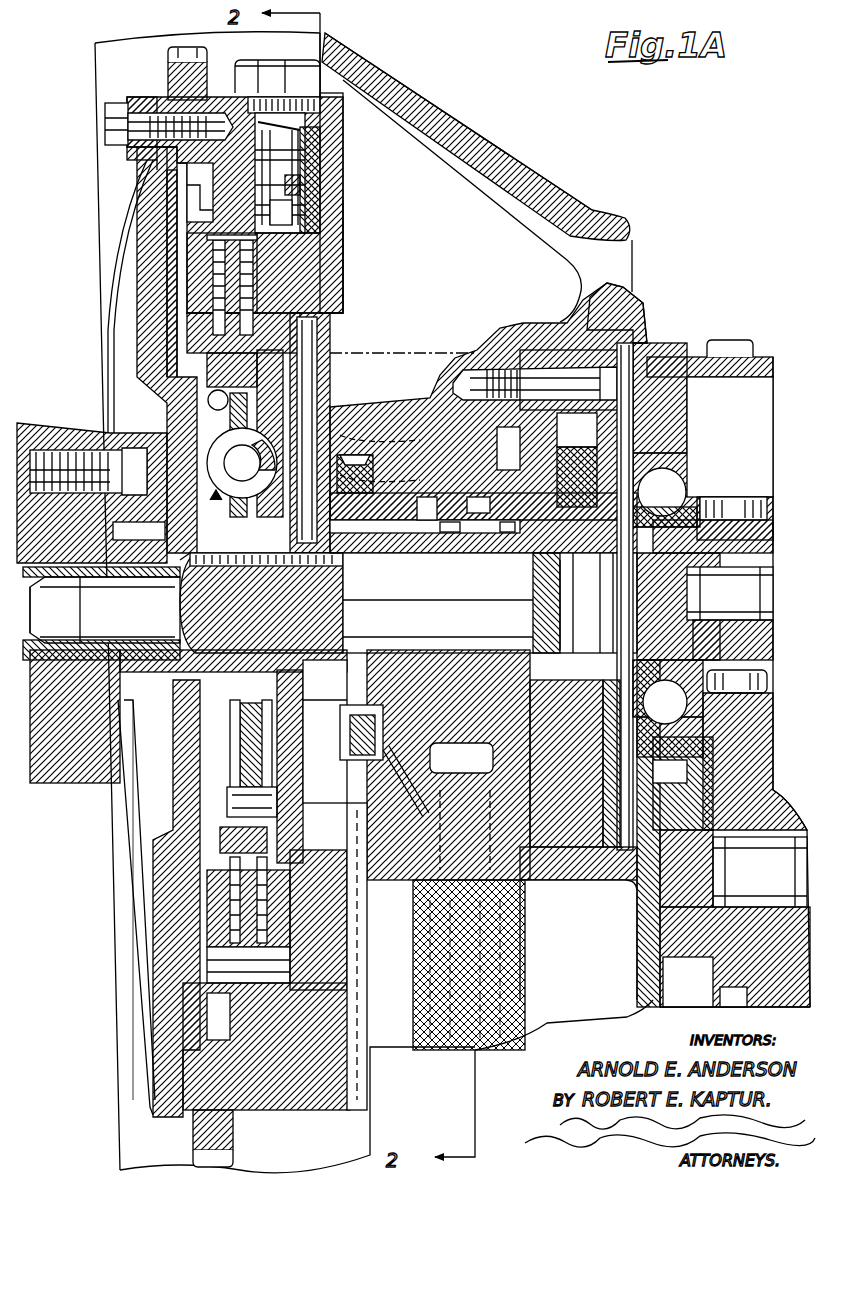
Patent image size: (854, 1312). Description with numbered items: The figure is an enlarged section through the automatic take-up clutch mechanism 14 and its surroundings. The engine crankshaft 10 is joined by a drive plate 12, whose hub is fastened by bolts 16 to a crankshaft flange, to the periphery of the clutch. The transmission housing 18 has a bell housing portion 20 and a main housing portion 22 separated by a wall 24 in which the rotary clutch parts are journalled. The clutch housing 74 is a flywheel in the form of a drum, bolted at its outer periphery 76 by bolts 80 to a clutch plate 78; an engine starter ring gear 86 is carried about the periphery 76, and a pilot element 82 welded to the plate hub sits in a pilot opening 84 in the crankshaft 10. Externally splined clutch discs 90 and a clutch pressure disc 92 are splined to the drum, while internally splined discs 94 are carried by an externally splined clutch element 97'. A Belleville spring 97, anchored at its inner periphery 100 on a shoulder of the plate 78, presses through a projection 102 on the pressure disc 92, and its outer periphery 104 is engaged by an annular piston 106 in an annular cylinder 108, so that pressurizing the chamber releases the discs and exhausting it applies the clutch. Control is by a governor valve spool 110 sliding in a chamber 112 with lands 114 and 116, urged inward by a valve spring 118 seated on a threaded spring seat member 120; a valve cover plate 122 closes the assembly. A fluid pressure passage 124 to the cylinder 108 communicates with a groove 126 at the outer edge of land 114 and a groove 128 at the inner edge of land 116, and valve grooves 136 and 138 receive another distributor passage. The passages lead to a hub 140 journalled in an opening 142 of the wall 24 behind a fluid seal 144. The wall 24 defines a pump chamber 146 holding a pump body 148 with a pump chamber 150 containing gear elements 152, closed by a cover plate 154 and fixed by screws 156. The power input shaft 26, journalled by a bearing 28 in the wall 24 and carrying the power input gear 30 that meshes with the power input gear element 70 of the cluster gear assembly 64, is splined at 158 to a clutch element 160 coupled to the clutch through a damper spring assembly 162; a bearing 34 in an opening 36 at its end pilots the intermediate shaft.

The engine crankshaft 10 is at (55, 783).
The drive plate 12 is at (108, 315).
The automatic take-up clutch mechanism 14 is at (350, 80).
The bolts 16 is at (120, 437).
The transmission housing 18 is at (452, 100).
The bell housing portion 20 is at (424, 74).
The main housing portion 22 is at (645, 935).
The separating wall 24 is at (520, 323).
The power input shaft 26 is at (483, 622).
The bearing 28 is at (640, 488).
The power input gear 30 is at (748, 498).
The bearing 34 is at (742, 583).
The opening 36 is at (774, 548).
The cluster gear assembly 64 is at (797, 790).
The power input gear element 70 is at (768, 682).
The clutch housing 74 is at (283, 1097).
The outer periphery 76 is at (213, 78).
The clutch plate 78 is at (135, 97).
The bolts 80 is at (110, 125).
The pilot element 82 is at (105, 545).
The pilot opening 84 is at (142, 695).
The engine starter ring gear 86 is at (180, 58).
The clutch discs 90 is at (150, 262).
The clutch pressure disc 92 is at (215, 300).
The clutch discs 94 is at (205, 335).
The spring 97 is at (93, 273).
The clutch element 97' is at (139, 370).
The inner periphery 100 is at (150, 382).
The projection 102 is at (193, 283).
The outer periphery 104 is at (160, 170).
The annular piston 106 is at (163, 180).
The annular cylinder 108 is at (142, 158).
The governor valve spool 110 is at (345, 200).
The governor valve chamber 112 is at (293, 210).
The valve land 114 is at (287, 160).
The valve land 116 is at (343, 232).
The valve spring 118 is at (322, 110).
The threaded spring seat member 120 is at (322, 63).
The valve cover plate 122 is at (368, 268).
The fluid pressure passage 124 is at (322, 337).
The groove 126 is at (318, 146).
The groove 128 is at (370, 246).
The valve groove 136 is at (322, 128).
The valve groove 138 is at (313, 184).
The hub 140 is at (443, 545).
The opening 142 is at (455, 740).
The fluid seal 144 is at (358, 455).
The pump chamber 146 is at (530, 350).
The pump body 148 is at (614, 398).
The pump chamber 150 is at (600, 443).
The pump gear elements 152 is at (520, 548).
The cover plate 154 is at (605, 495).
The screws 156 is at (670, 326).
The spline 158 is at (335, 630).
The clutch element 160 is at (265, 567).
The damper spring assembly 162 is at (92, 610).